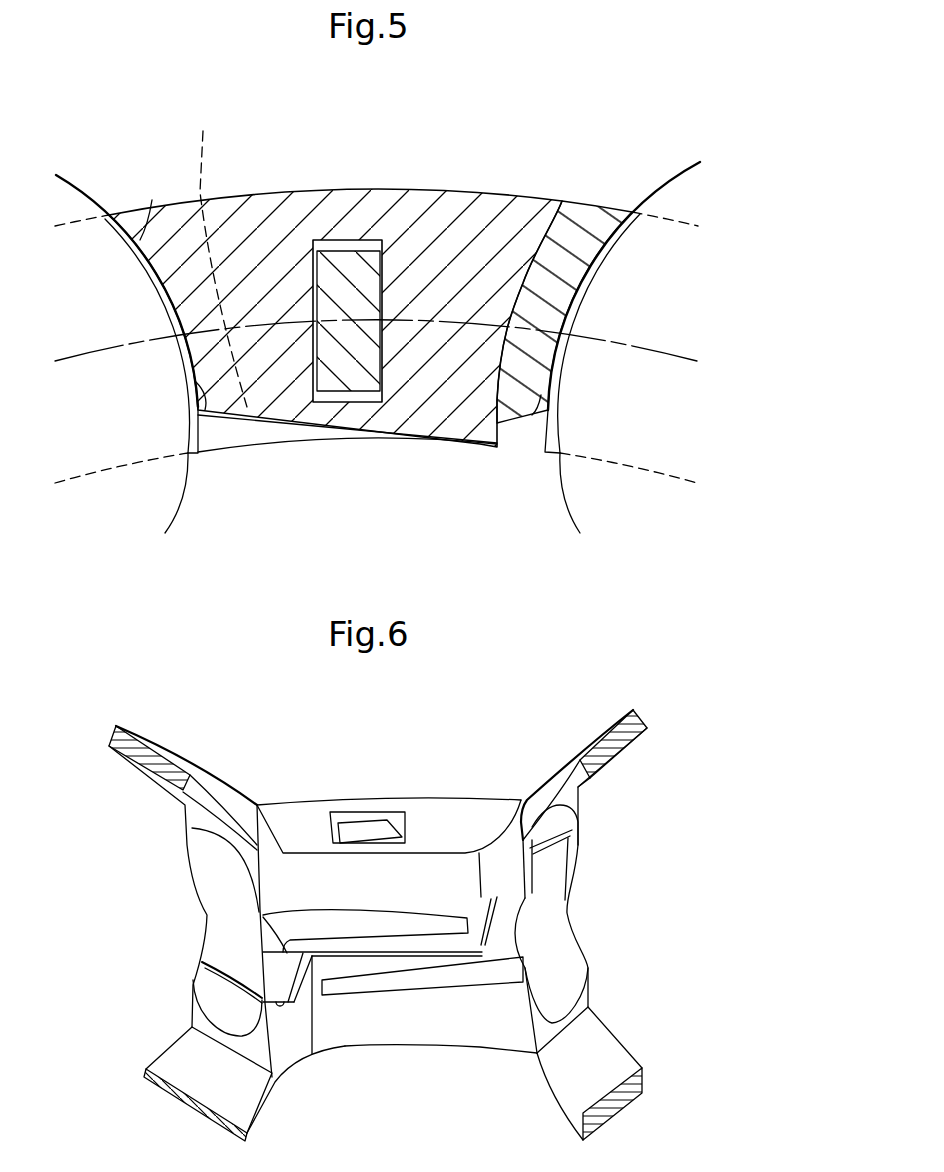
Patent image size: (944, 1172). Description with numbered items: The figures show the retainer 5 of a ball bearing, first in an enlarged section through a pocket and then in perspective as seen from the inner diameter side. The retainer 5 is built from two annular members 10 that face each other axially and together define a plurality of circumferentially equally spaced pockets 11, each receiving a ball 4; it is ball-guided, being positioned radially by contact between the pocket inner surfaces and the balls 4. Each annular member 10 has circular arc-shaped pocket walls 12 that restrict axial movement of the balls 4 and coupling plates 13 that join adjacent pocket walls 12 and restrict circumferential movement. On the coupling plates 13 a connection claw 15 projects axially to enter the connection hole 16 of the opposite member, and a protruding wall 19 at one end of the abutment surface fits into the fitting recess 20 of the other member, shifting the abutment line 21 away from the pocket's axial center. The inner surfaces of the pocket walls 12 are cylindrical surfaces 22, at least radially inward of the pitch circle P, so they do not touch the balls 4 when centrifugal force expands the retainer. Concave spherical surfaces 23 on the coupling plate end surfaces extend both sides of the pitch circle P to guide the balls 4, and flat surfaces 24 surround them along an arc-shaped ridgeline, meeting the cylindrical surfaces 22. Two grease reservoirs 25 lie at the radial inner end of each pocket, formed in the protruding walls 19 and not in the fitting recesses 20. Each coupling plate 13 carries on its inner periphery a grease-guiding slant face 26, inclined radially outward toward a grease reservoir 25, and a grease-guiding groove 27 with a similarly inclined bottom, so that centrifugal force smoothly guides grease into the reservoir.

In FIG. 5, the ball 4 is at (110, 213).
In FIG. 5, the retainer 5 is at (245, 190).
In FIG. 6, the retainer 5 is at (116, 724).
In FIG. 5, the annular member 10 is at (285, 190).
In FIG. 6, the annular member 10 is at (577, 835).
In FIG. 5, the pocket 11 is at (152, 200).
In FIG. 5, the pocket wall 12 is at (80, 230).
In FIG. 6, the pocket wall 12 is at (113, 740).
In FIG. 5, the coupling plate 13 is at (424, 198).
In FIG. 6, the coupling plate 13 is at (436, 813).
In FIG. 5, the connection claw 15 is at (362, 280).
In FIG. 6, the connection claw 15 is at (372, 830).
In FIG. 5, the connection hole 16 is at (338, 243).
In FIG. 5, the protruding wall 19 is at (587, 220).
In FIG. 6, the protruding wall 19 is at (303, 956).
In FIG. 5, the fitting recess 20 is at (542, 243).
In FIG. 6, the fitting recess 20 is at (288, 1010).
In FIG. 6, the abutment line 21 is at (223, 977).
In FIG. 6, the cylindrical surface 22 is at (190, 800).
In FIG. 5, the concave spherical surface 23 is at (170, 283).
In FIG. 6, the concave spherical surface 23 is at (218, 862).
In FIG. 6, the flat surface 24 is at (192, 822).
In FIG. 5, the grease reservoir 25 is at (200, 407).
In FIG. 6, the grease reservoir 25 is at (273, 952).
In FIG. 5, the grease-guiding slant face 26 is at (307, 430).
In FIG. 6, the grease-guiding slant face 26 is at (350, 872).
In FIG. 5, the grease-guiding groove 27 is at (268, 428).
In FIG. 6, the grease-guiding groove 27 is at (300, 925).
In FIG. 5, the pitch circle P is at (72, 366).